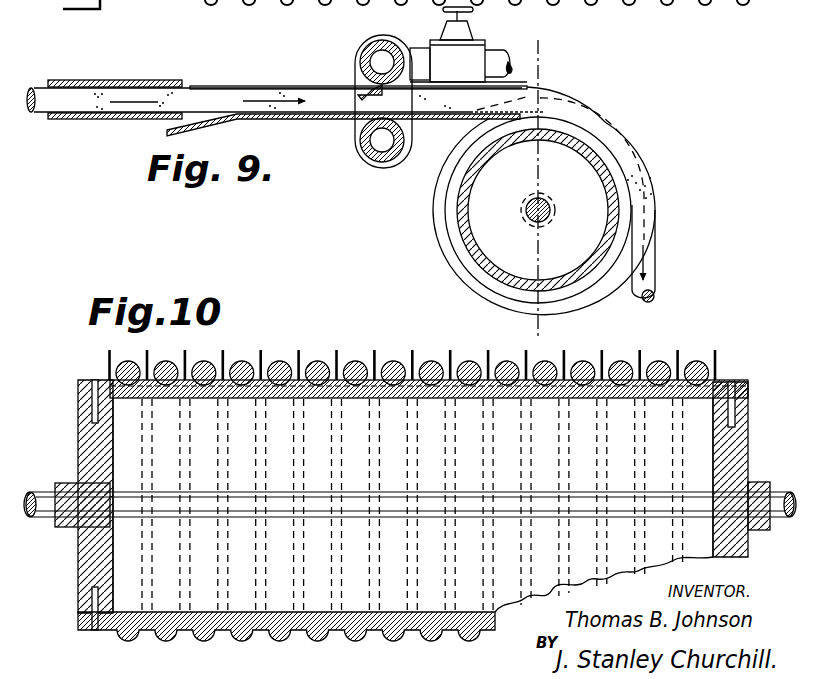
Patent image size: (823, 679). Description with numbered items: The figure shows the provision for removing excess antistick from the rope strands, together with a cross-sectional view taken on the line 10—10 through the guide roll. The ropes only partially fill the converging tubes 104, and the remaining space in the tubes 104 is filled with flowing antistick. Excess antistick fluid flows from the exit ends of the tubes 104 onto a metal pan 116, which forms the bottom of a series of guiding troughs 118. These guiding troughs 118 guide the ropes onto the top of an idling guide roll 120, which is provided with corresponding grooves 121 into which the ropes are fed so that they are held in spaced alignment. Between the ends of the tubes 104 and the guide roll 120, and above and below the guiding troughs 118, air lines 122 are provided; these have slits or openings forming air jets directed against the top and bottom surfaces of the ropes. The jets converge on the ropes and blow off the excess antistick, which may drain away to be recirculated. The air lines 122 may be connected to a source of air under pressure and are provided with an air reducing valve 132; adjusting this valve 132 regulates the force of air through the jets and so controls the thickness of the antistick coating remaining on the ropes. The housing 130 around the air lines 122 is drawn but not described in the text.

In FIG. 9, the converging tubes 104 is at (150, 80).
In FIG. 9, the metal pan 116 is at (268, 119).
In FIG. 9, the guiding troughs 118 is at (250, 85).
In FIG. 10, the guiding troughs 118 is at (393, 359).
In FIG. 9, the air lines 122 is at (392, 28).
In FIG. 9, the roller housing 130 is at (355, 57).
In FIG. 9, the air reducing valve 132 is at (470, 35).
In FIG. 9, the idling guide roll 120 is at (602, 147).
In FIG. 10, the idling guide roll 120 is at (772, 362).
In FIG. 9, the section line 10 is at (521, 52).
In FIG. 10, the grooves 121 is at (390, 390).